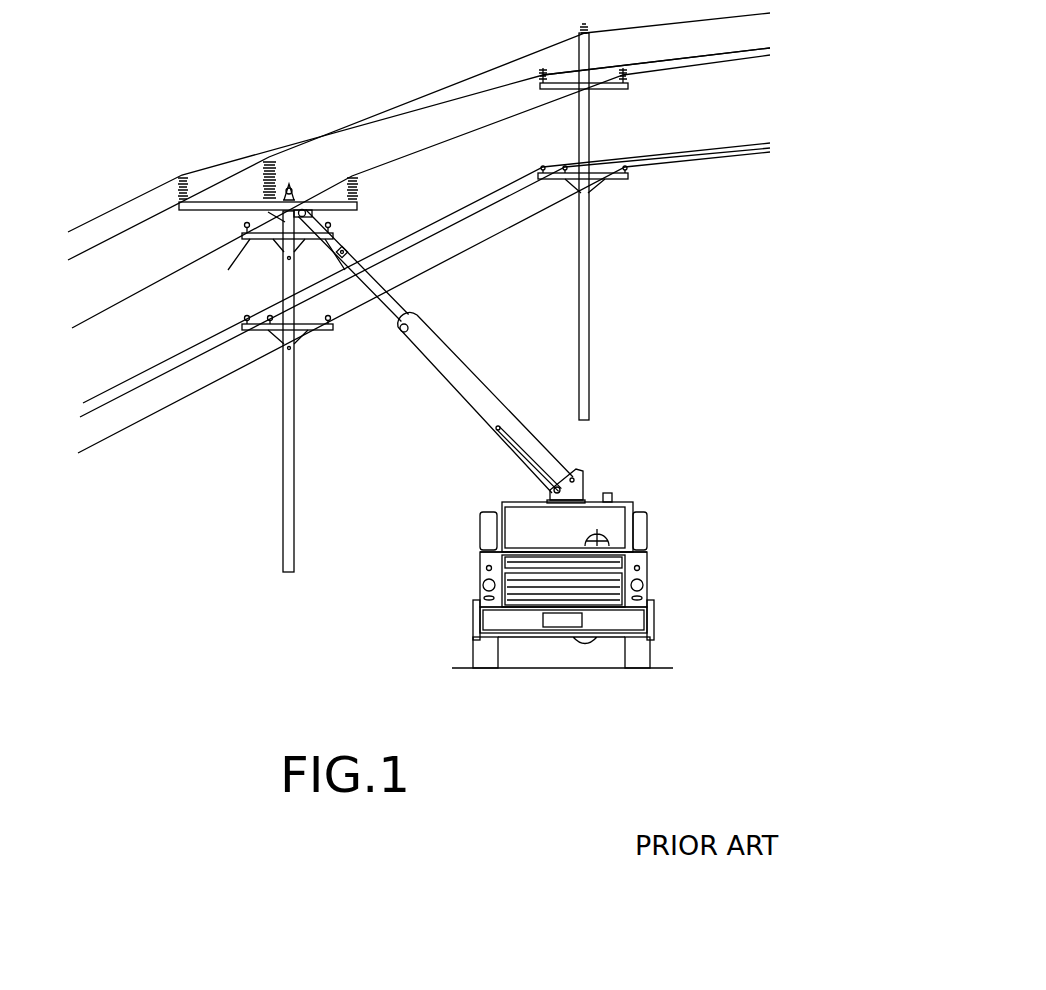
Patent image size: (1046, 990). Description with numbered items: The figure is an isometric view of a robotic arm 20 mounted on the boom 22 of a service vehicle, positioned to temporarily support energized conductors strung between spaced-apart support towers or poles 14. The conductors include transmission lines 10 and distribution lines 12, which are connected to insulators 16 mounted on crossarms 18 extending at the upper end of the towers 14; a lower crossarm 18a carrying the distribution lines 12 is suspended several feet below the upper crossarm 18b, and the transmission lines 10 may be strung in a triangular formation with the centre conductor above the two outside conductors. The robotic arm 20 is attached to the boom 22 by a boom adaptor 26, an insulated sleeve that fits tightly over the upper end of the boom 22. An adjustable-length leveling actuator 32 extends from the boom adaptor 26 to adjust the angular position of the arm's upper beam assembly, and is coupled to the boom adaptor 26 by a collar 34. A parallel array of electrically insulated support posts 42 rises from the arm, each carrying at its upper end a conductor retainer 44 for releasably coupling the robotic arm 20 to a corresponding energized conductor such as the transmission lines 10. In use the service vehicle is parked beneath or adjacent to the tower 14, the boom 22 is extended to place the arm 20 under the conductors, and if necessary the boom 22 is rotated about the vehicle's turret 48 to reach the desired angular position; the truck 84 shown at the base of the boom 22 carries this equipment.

The transmission lines 10 is at (148, 287).
The distribution lines 12 is at (110, 390).
The support towers or poles 14 is at (285, 525).
The insulators 16 is at (633, 165).
The crossarms 18 is at (242, 240).
The lower crossarm 18a is at (320, 331).
The upper crossarm 18b is at (245, 236).
The robotic arm 20 is at (362, 199).
The boom 22 is at (477, 383).
The boom adaptor 26 is at (335, 234).
The leveling actuator 32 is at (274, 228).
The collar 34 is at (343, 258).
The electrically insulated support posts 42 is at (190, 186).
The conductor retainer 44 is at (351, 177).
The turret 48 is at (589, 477).
The utility truck 84 is at (495, 620).